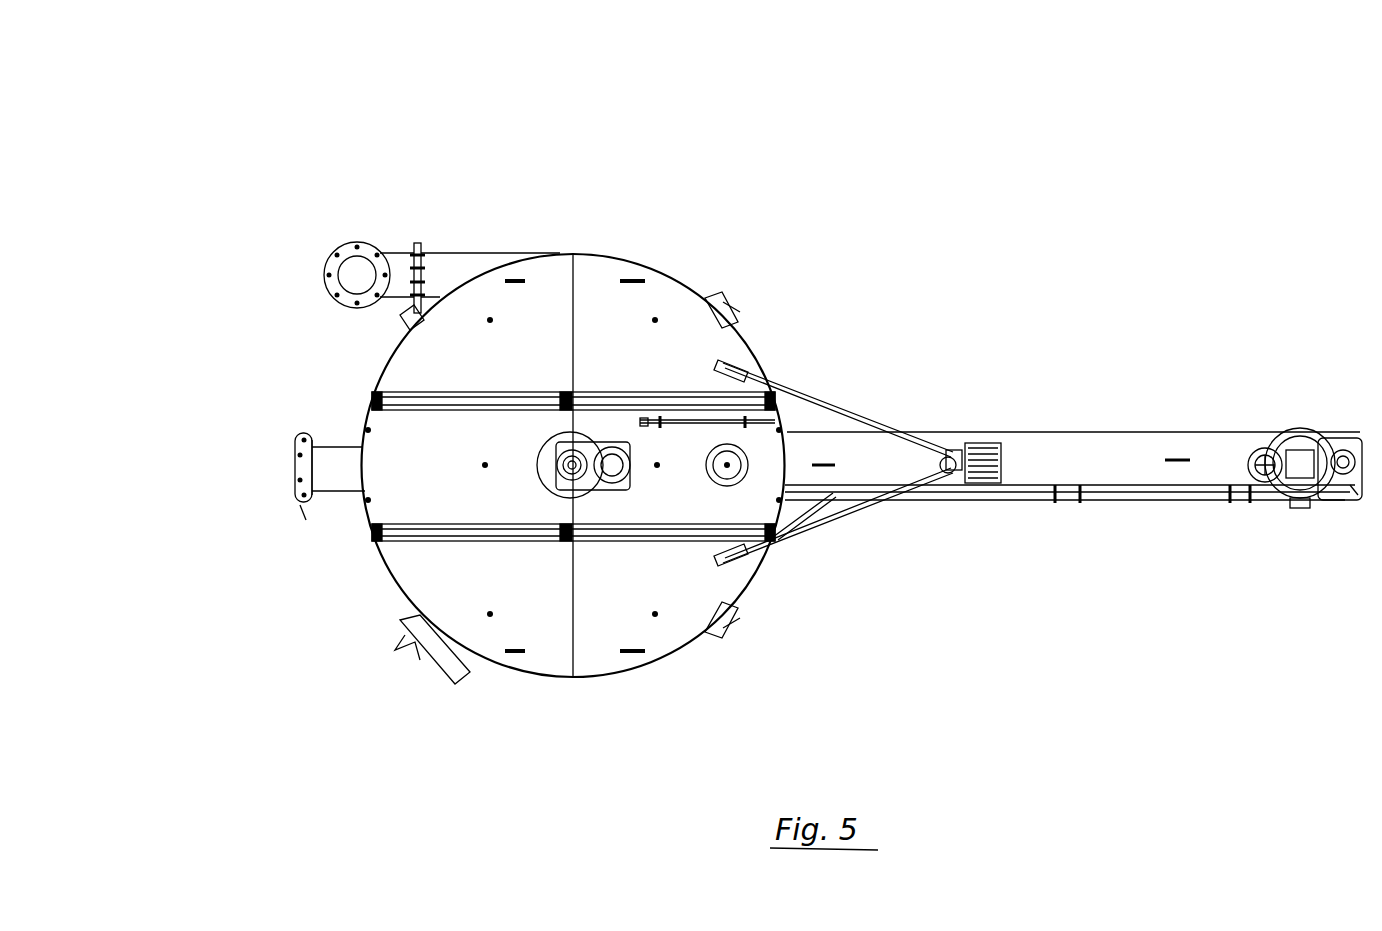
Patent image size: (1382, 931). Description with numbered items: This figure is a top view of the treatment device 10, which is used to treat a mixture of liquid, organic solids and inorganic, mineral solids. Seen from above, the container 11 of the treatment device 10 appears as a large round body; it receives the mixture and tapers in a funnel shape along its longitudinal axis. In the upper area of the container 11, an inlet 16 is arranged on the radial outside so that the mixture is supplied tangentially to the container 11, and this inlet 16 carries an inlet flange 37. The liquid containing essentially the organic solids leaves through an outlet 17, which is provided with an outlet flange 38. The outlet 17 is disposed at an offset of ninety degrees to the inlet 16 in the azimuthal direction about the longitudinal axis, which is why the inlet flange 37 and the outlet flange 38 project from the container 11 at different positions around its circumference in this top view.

The treatment device 10 is at (920, 167).
The container 11 is at (652, 245).
The inlet 16 is at (443, 228).
The outlet 17 is at (302, 527).
The inlet flange 37 is at (360, 273).
The outlet flange 38 is at (345, 470).